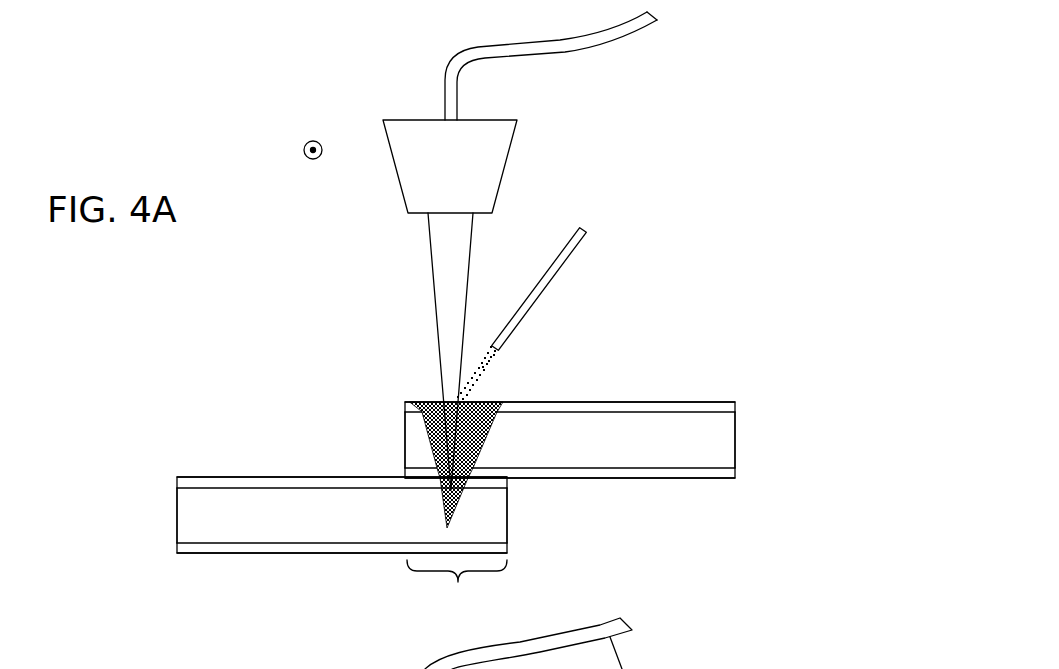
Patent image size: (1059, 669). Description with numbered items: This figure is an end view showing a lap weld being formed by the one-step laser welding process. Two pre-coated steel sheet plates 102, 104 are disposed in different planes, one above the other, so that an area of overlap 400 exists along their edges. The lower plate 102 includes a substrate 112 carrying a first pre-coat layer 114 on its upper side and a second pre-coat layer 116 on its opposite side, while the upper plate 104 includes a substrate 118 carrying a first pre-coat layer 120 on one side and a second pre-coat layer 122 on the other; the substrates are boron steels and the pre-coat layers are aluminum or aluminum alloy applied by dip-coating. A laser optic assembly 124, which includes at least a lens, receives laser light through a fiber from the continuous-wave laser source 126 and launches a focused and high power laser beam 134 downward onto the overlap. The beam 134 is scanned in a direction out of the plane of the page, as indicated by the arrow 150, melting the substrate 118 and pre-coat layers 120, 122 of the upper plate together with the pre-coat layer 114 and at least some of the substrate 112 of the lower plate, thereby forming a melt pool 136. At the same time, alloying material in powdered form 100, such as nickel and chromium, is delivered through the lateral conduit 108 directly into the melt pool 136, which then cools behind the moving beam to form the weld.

The alloying material in powdered form 100 is at (487, 367).
The pre-coated steel sheet plate 102 is at (258, 477).
The pre-coated steel sheet plate 104 is at (692, 402).
The lateral conduit 108 is at (548, 282).
The substrate 112 is at (220, 528).
The first pre-coat layer 114 is at (207, 483).
The second pre-coat layer 116 is at (180, 555).
The substrate 118 is at (695, 458).
The first pre-coat layer 120 is at (722, 408).
The second pre-coat layer 122 is at (593, 473).
The laser optic assembly 124 is at (473, 173).
The laser source 126 is at (628, 30).
The focused and high power laser beam 134 is at (447, 307).
The melt pool 136 is at (430, 403).
The arrow 150 is at (303, 158).
The area of overlap 400 is at (457, 585).